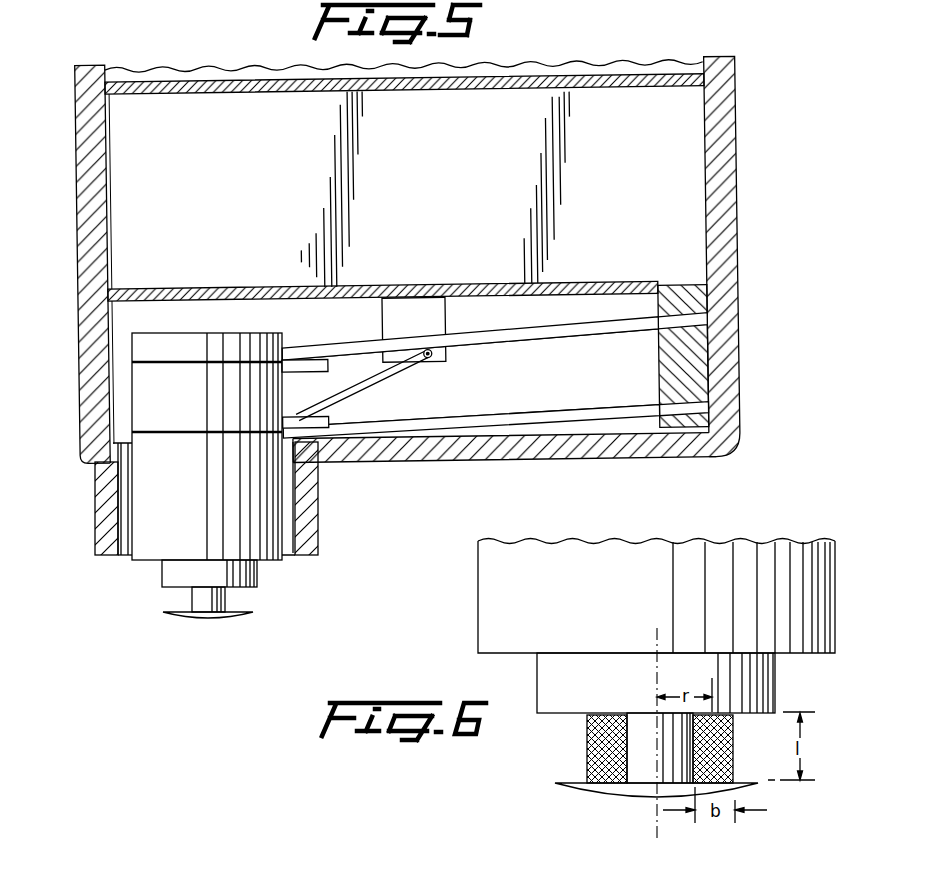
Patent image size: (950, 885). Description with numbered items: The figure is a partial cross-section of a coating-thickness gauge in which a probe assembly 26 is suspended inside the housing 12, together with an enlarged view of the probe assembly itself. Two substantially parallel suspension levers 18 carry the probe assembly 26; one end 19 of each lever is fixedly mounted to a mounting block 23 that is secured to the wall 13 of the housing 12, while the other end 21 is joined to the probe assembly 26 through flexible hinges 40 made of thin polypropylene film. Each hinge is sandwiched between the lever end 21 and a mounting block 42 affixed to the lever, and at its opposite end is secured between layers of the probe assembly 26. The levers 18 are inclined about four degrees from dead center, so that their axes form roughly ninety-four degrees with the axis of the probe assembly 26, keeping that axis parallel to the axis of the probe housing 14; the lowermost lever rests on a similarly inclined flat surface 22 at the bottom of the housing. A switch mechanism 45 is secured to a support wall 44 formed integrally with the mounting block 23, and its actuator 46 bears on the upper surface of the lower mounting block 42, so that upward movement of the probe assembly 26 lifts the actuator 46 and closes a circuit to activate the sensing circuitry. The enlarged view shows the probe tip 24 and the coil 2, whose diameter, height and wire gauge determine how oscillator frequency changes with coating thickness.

In FIG. 6, the coil 2 is at (588, 747).
In FIG. 5, the housing 12 is at (749, 155).
In FIG. 5, the wall 13 is at (731, 356).
In FIG. 5, the probe housing 14 is at (95, 508).
In FIG. 5, the suspension levers 18 is at (550, 411).
In FIG. 5, the one end 19 is at (703, 405).
In FIG. 5, the other end 21 is at (293, 443).
In FIG. 5, the flat surface 22 is at (372, 461).
In FIG. 5, the mounting block 23 is at (668, 362).
In FIG. 5, the probe tip 24 is at (223, 619).
In FIG. 6, the probe tip 24 is at (637, 799).
In FIG. 5, the probe assembly 26 is at (156, 562).
In FIG. 6, the probe assembly 26 is at (817, 656).
In FIG. 5, the flexible hinges 40 is at (163, 428).
In FIG. 5, the mounting blocks 42 is at (290, 417).
In FIG. 5, the support wall 44 is at (188, 288).
In FIG. 5, the switch mechanism 45 is at (448, 313).
In FIG. 5, the actuator 46 is at (394, 382).